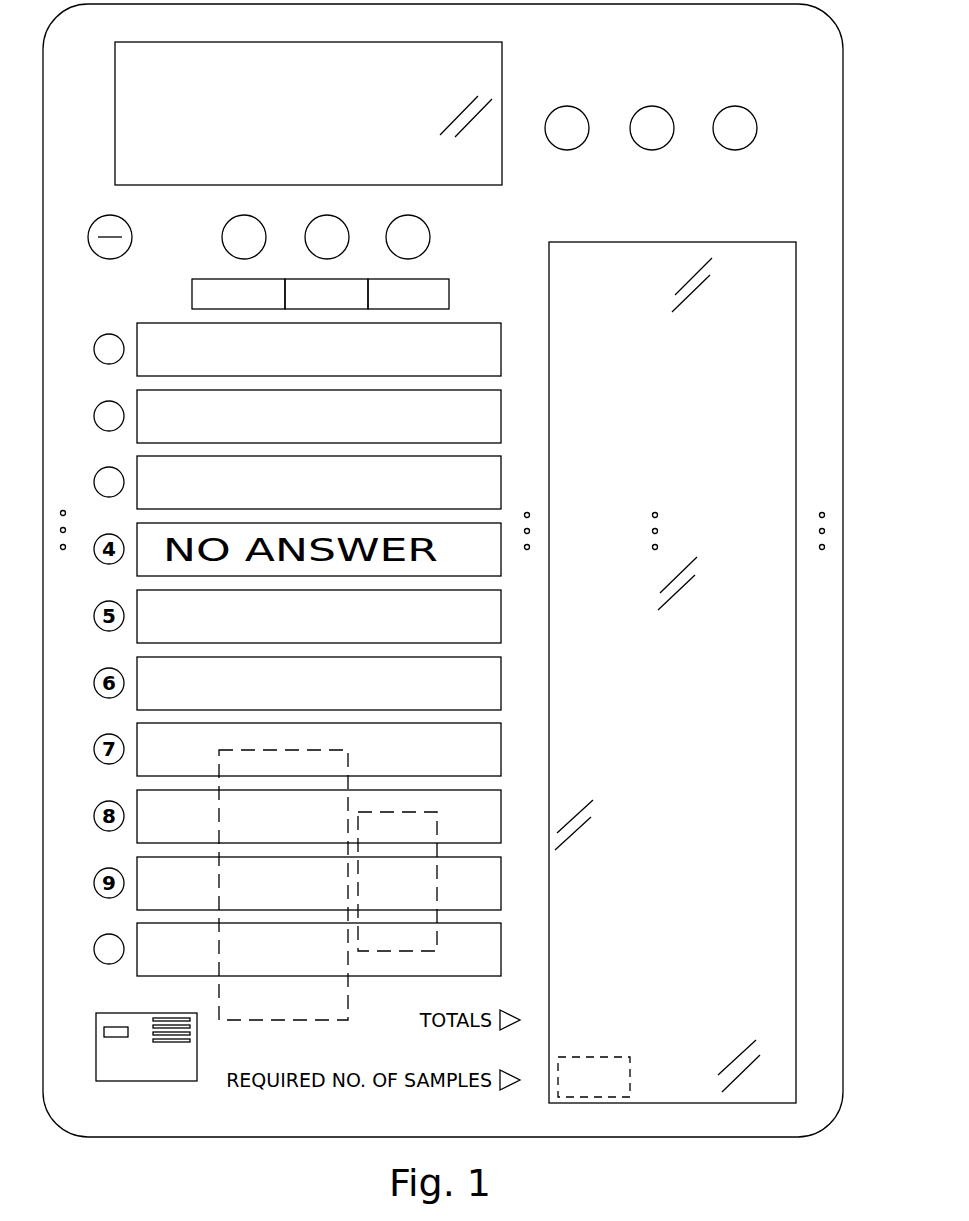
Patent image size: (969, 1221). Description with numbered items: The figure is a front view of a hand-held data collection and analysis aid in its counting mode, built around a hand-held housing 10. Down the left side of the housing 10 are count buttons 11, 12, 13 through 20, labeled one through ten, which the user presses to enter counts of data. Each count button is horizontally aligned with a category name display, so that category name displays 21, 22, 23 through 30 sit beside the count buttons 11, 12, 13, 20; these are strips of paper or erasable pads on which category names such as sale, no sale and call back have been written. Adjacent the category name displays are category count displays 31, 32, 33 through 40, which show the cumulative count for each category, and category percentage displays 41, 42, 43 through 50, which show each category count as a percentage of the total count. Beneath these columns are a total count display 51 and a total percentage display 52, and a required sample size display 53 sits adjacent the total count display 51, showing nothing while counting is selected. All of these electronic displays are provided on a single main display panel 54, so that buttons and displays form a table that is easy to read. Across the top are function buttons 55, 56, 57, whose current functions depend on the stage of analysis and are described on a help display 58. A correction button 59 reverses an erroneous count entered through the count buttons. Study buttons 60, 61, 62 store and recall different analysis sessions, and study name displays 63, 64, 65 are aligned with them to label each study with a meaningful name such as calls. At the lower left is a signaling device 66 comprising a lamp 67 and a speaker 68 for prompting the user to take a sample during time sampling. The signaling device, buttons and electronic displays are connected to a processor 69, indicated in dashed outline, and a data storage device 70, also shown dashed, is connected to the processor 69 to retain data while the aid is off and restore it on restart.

The hand-held housing 10 is at (832, 208).
The count button 11 is at (94, 349).
The count button 12 is at (94, 416).
The count button 13 is at (94, 482).
The count button 20 is at (94, 949).
The category name display 21 is at (487, 349).
The category name display 22 is at (487, 416).
The category name display 23 is at (487, 482).
The category name display 30 is at (487, 950).
The category count display 31 is at (625, 349).
The category count display 32 is at (625, 416).
The category count display 33 is at (625, 482).
The category count display 40 is at (618, 949).
The category percentage display 41 is at (762, 349).
The category percentage display 42 is at (762, 416).
The category percentage display 43 is at (762, 482).
The category percentage display 50 is at (742, 948).
The total count display 51 is at (614, 1013).
The total percentage display 52 is at (764, 1013).
The required sample size display 53 is at (632, 1077).
The main display panel 54 is at (782, 650).
The function button 55 is at (567, 106).
The function button 56 is at (652, 106).
The function button 57 is at (735, 106).
The help display 58 is at (490, 60).
The correction button 59 is at (96, 219).
The study button 60 is at (231, 219).
The study button 61 is at (314, 219).
The study button 62 is at (396, 219).
The study name display 63 is at (226, 280).
The study name display 64 is at (308, 280).
The study name display 65 is at (391, 280).
The signaling device 66 is at (145, 1082).
The lamp 67 is at (103, 1031).
The speaker 68 is at (190, 1040).
The processor 69 is at (218, 882).
The data storage device 70 is at (437, 868).